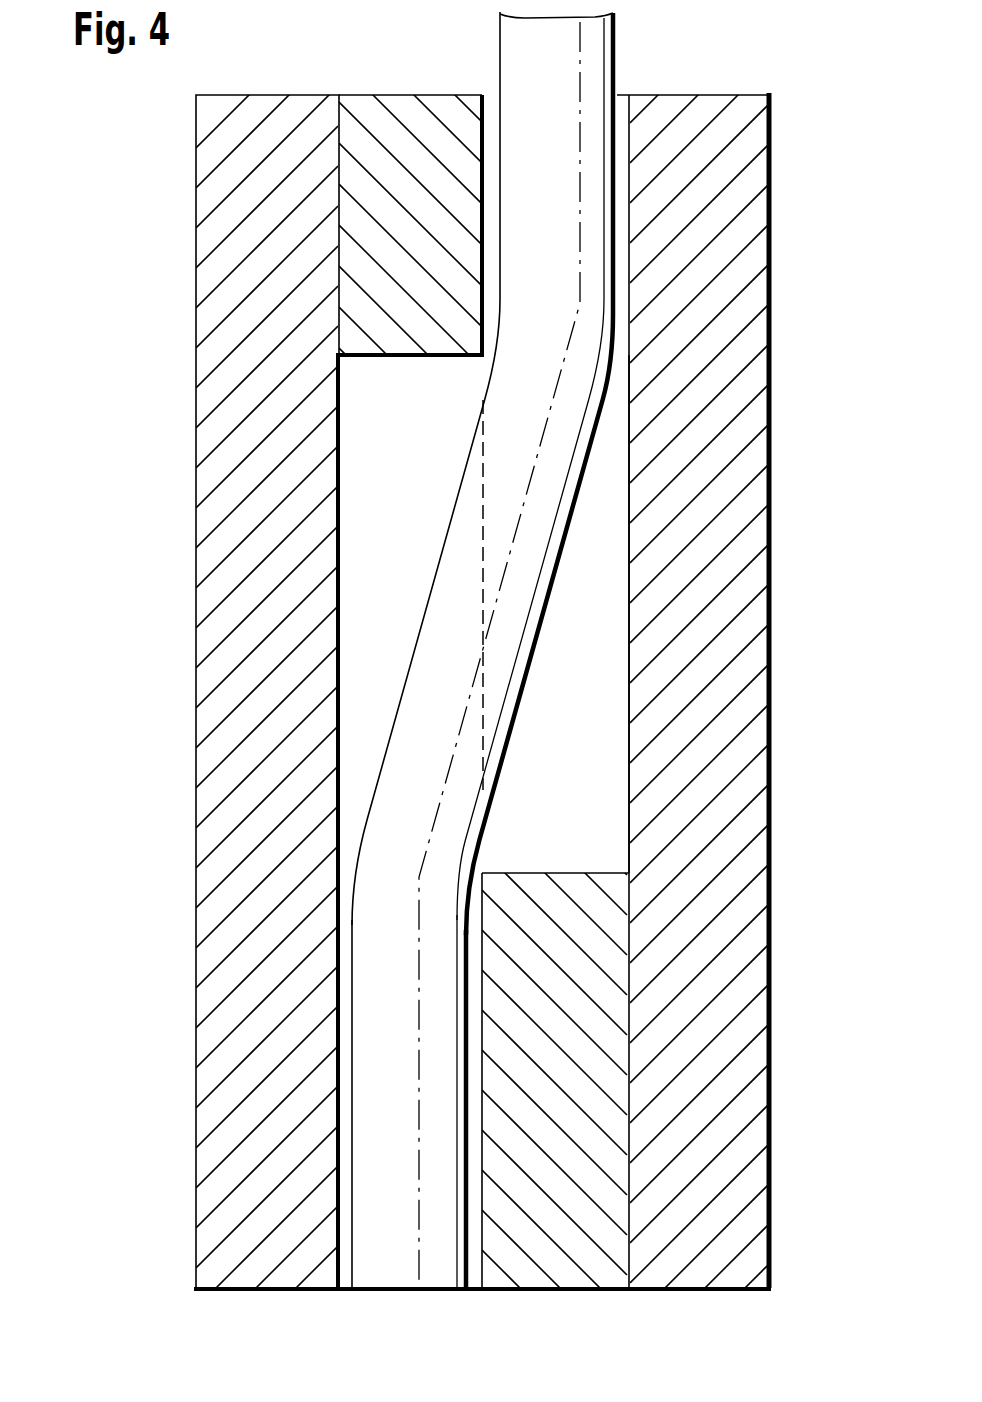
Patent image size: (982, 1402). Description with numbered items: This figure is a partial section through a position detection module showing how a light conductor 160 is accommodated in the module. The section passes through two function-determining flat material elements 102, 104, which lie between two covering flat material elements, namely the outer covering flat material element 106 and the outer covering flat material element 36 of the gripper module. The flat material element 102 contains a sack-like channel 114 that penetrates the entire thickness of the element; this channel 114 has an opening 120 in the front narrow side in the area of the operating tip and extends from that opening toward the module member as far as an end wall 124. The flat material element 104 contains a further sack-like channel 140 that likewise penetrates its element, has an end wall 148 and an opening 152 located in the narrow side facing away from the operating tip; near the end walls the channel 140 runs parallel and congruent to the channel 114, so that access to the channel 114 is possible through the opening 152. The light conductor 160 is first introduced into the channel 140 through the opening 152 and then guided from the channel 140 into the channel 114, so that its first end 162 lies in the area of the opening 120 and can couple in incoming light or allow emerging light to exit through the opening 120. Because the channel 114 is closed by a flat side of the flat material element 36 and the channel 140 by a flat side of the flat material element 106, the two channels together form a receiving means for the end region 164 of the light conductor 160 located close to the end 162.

The outer, covering flat material element 36 is at (203, 530).
The function-determining flat material element 102 is at (368, 110).
The function-determining flat material element 104 is at (610, 1078).
The outer, covering flat material element 106 is at (748, 500).
The channel 114 is at (358, 636).
The opening 120 is at (466, 1290).
The end wall 124 is at (398, 356).
The channel 140 is at (600, 728).
The end wall 148 is at (556, 873).
The opening 152 is at (620, 95).
The light conductor 160 is at (513, 40).
The first end 162 is at (398, 1290).
The end region 164 is at (365, 1240).